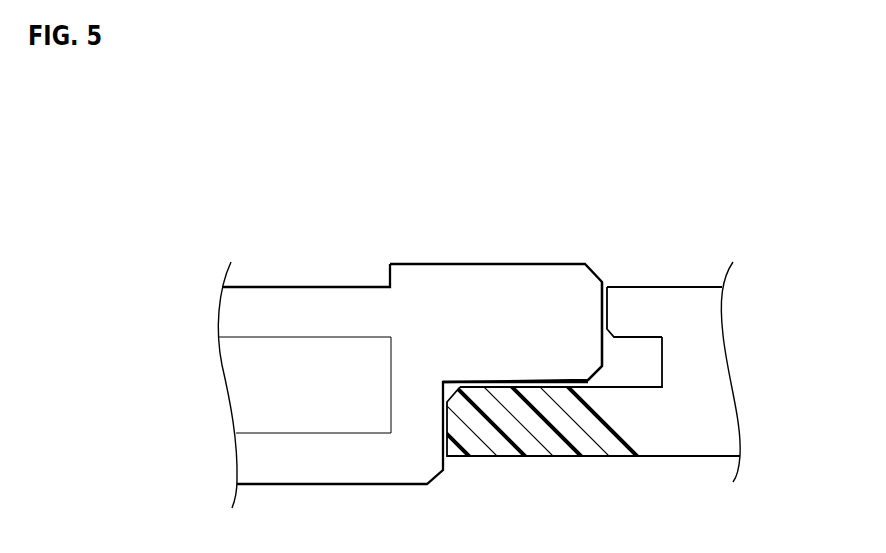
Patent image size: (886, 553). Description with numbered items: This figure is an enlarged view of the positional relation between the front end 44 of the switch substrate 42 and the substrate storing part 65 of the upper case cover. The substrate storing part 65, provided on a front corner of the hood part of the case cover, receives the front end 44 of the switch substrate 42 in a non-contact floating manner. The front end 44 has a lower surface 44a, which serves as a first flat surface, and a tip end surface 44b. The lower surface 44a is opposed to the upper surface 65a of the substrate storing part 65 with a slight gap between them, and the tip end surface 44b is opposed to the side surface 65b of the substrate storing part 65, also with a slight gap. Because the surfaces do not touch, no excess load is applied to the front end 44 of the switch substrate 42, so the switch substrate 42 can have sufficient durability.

The switch substrate 42 is at (321, 273).
The front end of the switch substrate 44 is at (479, 362).
The lower surface 44a is at (525, 383).
The tip end surface 44b is at (624, 327).
The substrate storing part 65 is at (414, 361).
The upper surface of the substrate storing part 65a is at (577, 388).
The side surface of the substrate storing part 65b is at (605, 305).